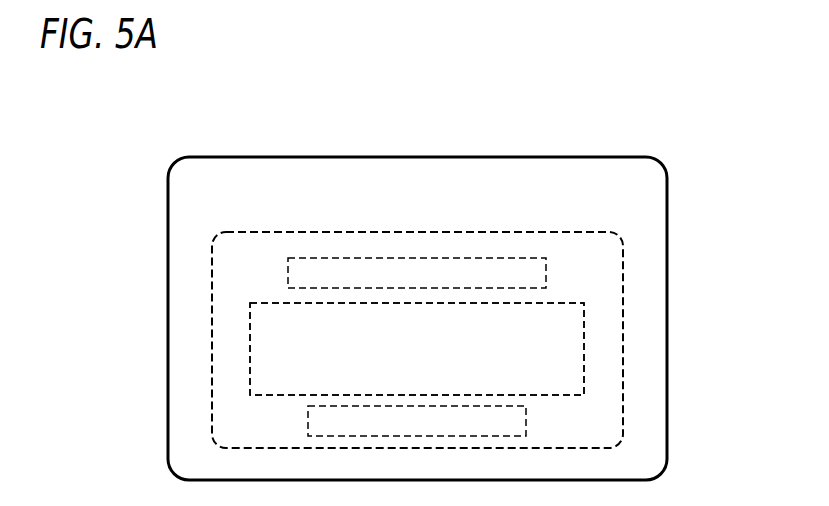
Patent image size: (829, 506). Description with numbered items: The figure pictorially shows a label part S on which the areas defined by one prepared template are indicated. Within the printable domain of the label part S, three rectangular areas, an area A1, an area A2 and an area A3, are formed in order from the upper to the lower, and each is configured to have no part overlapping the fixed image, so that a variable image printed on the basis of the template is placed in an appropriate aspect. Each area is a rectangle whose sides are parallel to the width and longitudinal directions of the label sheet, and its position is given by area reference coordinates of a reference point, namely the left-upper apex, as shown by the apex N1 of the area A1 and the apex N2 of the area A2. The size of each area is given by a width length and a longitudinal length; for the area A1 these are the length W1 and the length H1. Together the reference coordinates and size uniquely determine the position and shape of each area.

The label part S is at (517, 157).
The apex N1 is at (288, 257).
The area A1 is at (521, 258).
The length H1 is at (288, 258).
The length W1 is at (545, 260).
The apex N2 is at (250, 303).
The area A2 is at (584, 343).
The area A3 is at (526, 425).